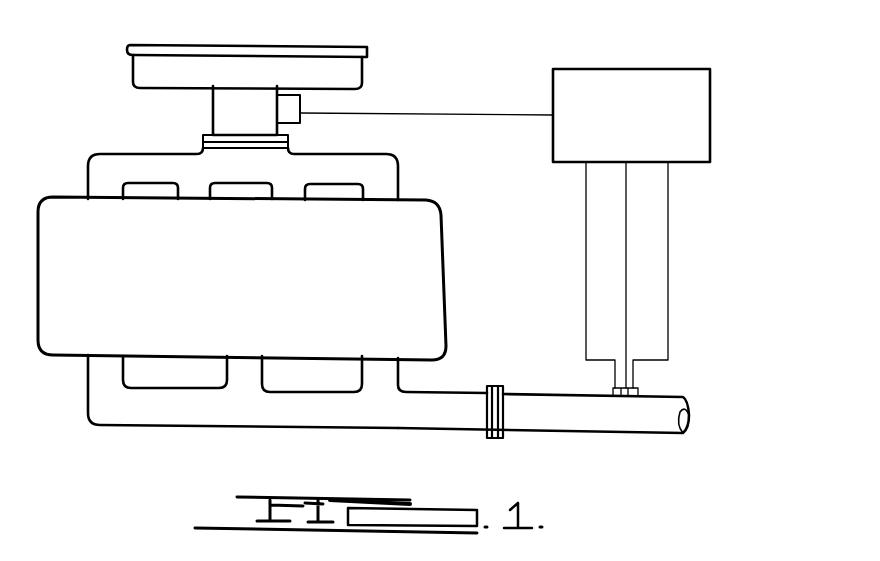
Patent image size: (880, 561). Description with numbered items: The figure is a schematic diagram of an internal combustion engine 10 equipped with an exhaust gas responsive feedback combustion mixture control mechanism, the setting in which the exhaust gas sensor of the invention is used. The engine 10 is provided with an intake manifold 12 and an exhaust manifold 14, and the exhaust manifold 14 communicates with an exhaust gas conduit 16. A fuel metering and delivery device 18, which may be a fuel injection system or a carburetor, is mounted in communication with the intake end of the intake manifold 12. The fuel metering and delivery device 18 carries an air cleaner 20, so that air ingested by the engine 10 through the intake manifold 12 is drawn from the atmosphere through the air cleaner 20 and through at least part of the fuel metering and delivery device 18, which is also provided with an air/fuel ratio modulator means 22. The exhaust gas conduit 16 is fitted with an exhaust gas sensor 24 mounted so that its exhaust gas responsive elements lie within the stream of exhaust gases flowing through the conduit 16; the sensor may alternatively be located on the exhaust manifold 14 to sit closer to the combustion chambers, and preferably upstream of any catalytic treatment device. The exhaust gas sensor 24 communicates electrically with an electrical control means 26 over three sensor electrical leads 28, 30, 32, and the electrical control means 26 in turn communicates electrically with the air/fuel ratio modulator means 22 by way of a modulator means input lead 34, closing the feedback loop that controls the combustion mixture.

The internal combustion engine 10 is at (266, 288).
The intake manifold 12 is at (88, 165).
The exhaust manifold 14 is at (88, 406).
The exhaust gas conduit 16 is at (567, 432).
The fuel metering and delivery device 18 is at (213, 112).
The air cleaner 20 is at (133, 64).
The air/fuel ratio modulator means 22 is at (302, 125).
The exhaust gas sensor 24 is at (639, 393).
The electrical control means 26 is at (710, 118).
The sensor electrical lead 28 is at (586, 265).
The sensor electrical lead 30 is at (626, 245).
The sensor electrical lead 32 is at (668, 284).
The modulator means input lead 34 is at (470, 113).